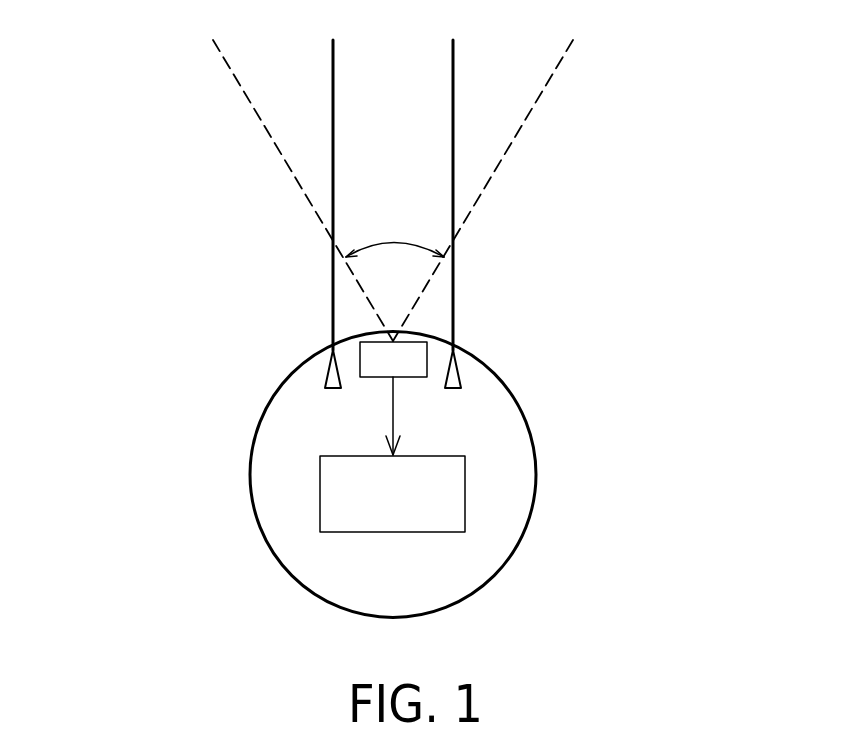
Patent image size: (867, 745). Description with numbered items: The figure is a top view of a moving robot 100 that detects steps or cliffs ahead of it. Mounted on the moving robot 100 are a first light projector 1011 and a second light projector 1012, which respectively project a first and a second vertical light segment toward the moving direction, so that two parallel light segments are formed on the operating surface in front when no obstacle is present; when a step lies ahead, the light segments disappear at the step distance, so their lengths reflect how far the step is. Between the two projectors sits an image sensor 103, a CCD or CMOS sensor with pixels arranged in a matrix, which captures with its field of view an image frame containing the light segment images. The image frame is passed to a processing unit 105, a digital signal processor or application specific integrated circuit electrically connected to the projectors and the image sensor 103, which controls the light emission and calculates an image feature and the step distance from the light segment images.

The moving robot 100 is at (98, 75).
The first light projector 1011 is at (330, 386).
The second light projector 1012 is at (461, 381).
The image sensor 103 is at (415, 357).
The processing unit 105 is at (465, 478).